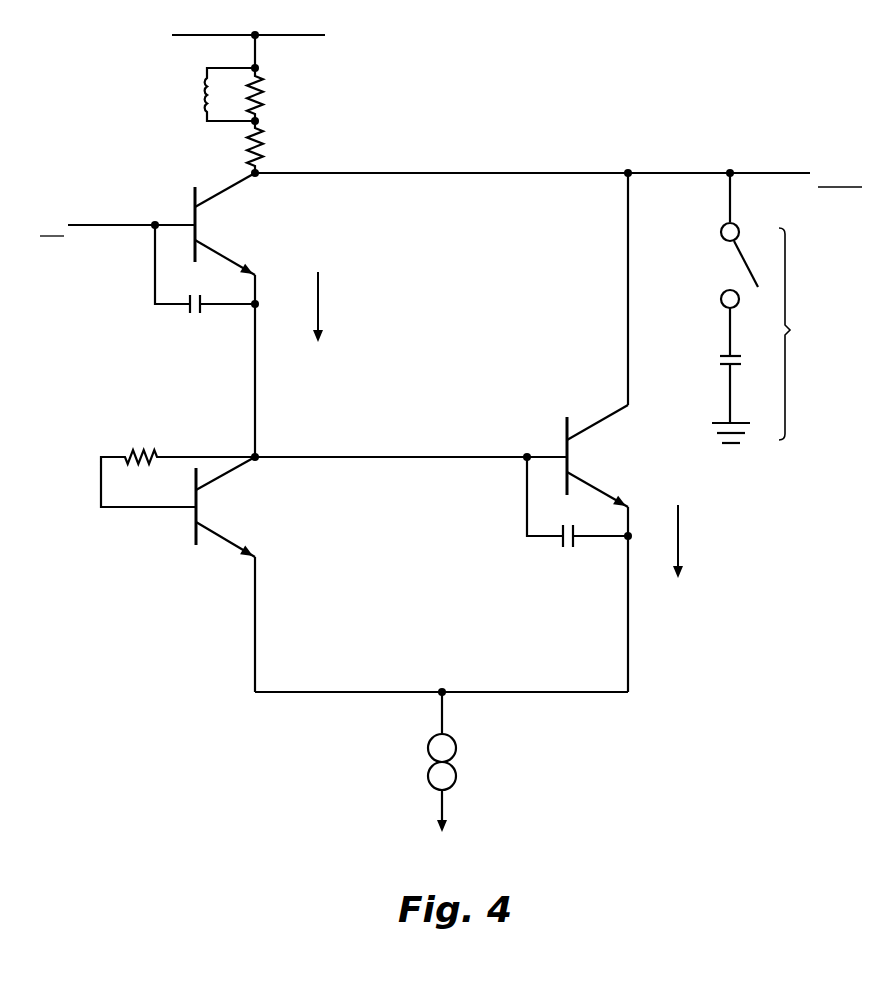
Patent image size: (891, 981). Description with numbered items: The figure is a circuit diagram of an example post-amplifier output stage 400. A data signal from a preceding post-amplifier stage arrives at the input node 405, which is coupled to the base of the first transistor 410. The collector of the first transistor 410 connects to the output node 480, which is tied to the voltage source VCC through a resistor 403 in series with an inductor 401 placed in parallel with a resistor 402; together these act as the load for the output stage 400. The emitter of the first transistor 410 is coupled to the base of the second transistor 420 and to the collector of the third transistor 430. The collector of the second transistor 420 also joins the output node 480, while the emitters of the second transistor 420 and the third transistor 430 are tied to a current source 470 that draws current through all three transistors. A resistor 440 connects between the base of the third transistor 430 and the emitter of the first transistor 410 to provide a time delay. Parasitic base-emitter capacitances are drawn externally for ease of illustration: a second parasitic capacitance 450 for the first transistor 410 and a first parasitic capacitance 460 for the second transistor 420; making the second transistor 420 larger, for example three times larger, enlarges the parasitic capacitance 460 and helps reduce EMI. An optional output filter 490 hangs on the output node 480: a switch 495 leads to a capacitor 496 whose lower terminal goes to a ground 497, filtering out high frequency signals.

The post-amplifier output stage 400 is at (466, 47).
The inductor 401 is at (205, 97).
The resistor 402 is at (267, 97).
The resistor 403 is at (267, 147).
The input node 405 is at (72, 204).
The first transistor 410 is at (177, 201).
The second transistor 420 is at (545, 431).
The third transistor 430 is at (180, 524).
The resistor 440 is at (128, 452).
The second parasitic capacitance 450 is at (186, 308).
The first parasitic capacitance 460 is at (558, 543).
The current source 470 is at (458, 775).
The output node 480 is at (798, 153).
The output filter 490 is at (807, 334).
The switch 495 is at (714, 267).
The capacitor 496 is at (718, 362).
The ground 497 is at (733, 450).